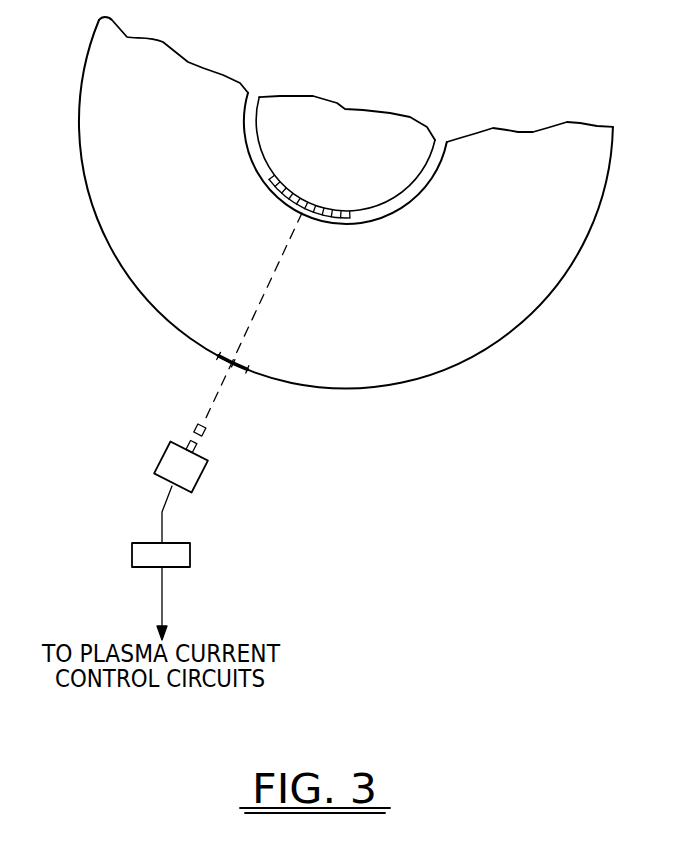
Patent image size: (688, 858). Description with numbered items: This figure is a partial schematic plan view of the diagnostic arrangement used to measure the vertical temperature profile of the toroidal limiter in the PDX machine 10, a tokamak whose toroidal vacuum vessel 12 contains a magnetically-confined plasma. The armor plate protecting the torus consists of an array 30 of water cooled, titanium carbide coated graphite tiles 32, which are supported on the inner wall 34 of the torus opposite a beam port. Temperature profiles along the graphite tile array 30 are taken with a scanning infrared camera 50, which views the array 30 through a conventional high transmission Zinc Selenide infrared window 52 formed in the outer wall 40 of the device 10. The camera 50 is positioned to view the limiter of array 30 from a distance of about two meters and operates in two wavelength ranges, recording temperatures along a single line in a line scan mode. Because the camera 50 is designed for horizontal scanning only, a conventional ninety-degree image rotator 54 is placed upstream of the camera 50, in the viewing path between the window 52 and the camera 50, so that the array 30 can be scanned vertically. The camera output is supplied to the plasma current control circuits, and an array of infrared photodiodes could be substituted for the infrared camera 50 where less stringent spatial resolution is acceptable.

The PDX machine 10 is at (304, 82).
The toroidal vacuum vessel 12 is at (188, 193).
The array of graphite tiles 30 is at (292, 205).
The graphite tiles 32 is at (328, 226).
The inner wall 34 is at (296, 203).
The outer wall 40 is at (174, 321).
The scanning infrared camera 50 is at (165, 470).
The infrared window 52 is at (240, 362).
The image rotator 54 is at (198, 423).